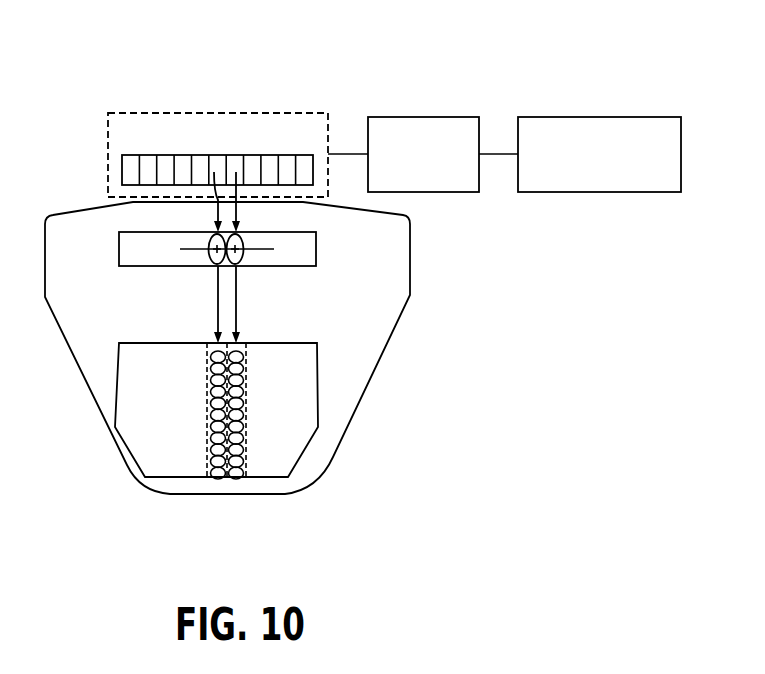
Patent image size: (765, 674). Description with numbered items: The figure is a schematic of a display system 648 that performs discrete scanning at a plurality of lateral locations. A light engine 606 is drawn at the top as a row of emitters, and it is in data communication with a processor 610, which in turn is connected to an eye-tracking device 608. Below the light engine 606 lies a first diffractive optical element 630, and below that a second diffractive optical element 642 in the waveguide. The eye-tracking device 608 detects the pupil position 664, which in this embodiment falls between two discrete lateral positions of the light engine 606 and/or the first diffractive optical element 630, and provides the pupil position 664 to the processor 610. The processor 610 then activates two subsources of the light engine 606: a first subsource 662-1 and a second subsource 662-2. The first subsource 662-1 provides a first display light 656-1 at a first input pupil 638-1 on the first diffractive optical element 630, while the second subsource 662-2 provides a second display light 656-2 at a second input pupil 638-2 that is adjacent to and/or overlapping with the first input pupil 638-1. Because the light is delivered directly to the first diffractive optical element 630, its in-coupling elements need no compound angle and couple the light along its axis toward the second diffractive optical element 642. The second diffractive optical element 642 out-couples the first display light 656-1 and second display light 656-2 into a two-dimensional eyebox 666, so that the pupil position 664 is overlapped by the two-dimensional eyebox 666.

The display system 648 is at (406, 78).
The light engine 606 is at (293, 146).
The processor 610 is at (440, 180).
The eye-tracking device 608 is at (650, 180).
The second diffractive optical element 642 is at (306, 398).
The first diffractive optical element 630 is at (317, 258).
The first subsource 662-1 is at (214, 202).
The second subsource 662-2 is at (240, 202).
The first input pupil 638-1 is at (211, 262).
The second input pupil 638-2 is at (241, 262).
The first display light 656-1 is at (217, 310).
The second display light 656-2 is at (237, 310).
The pupil position 664 is at (229, 426).
The two-dimensional eyebox 666 is at (244, 418).